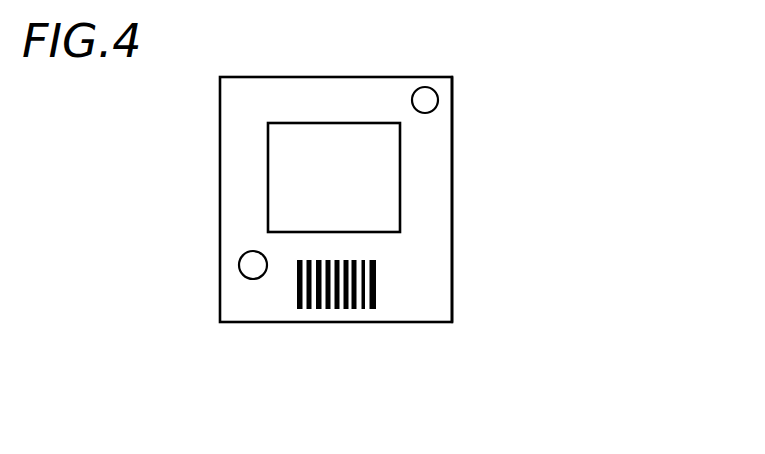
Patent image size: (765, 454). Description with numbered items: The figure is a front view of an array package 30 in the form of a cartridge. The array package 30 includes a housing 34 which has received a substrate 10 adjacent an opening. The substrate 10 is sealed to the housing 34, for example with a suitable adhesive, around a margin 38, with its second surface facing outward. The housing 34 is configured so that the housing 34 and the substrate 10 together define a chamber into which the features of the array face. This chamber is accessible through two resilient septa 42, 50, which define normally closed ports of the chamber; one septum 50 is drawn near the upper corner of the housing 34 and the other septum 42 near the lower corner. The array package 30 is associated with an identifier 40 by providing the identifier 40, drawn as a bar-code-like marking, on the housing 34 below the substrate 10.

The array package 30 is at (502, 262).
The housing 34 is at (420, 214).
The margin 38 is at (268, 197).
The substrate 10 is at (380, 171).
The resilient septum 50 is at (425, 87).
The resilient septum 42 is at (253, 265).
The identifier 40 is at (307, 310).